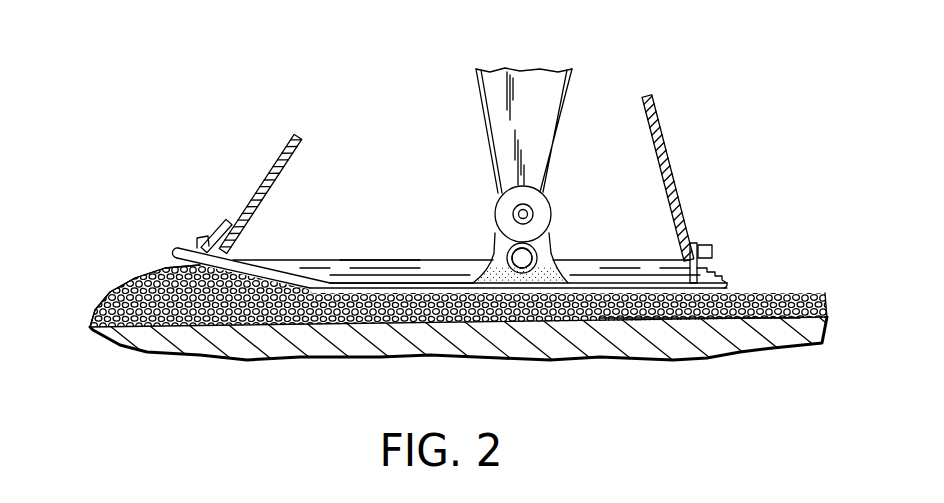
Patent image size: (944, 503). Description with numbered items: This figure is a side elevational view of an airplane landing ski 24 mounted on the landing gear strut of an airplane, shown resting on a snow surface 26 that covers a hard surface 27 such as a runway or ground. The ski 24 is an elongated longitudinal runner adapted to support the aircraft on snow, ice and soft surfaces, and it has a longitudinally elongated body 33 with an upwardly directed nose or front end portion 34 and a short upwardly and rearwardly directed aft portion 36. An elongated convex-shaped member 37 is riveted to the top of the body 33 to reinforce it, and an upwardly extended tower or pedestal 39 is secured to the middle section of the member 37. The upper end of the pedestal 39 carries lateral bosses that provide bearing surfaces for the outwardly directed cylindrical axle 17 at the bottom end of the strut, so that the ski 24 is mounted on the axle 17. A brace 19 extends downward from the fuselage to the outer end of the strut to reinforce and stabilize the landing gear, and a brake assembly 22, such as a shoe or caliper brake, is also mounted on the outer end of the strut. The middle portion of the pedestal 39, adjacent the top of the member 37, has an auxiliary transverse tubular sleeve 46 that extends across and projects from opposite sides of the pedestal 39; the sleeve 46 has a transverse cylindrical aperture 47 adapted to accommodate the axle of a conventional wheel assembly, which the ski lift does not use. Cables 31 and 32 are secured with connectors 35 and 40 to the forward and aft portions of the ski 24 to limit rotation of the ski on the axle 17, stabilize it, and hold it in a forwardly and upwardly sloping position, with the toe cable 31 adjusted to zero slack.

The axle 17 is at (526, 211).
The brace 19 is at (532, 77).
The brake assembly 22 is at (497, 203).
The ski 24 is at (292, 258).
The snow surface 26 is at (783, 293).
The hard surface 27 is at (281, 347).
The cable 31 is at (278, 172).
The cable 32 is at (657, 133).
The body 33 is at (422, 290).
The front end portion 34 is at (177, 272).
The connector 35 is at (207, 225).
The aft portion 36 is at (712, 318).
The convex-shaped member 37 is at (373, 258).
The pedestal 39 is at (537, 238).
The connector 40 is at (688, 243).
The tubular sleeve 46 is at (522, 258).
The aperture 47 is at (524, 258).